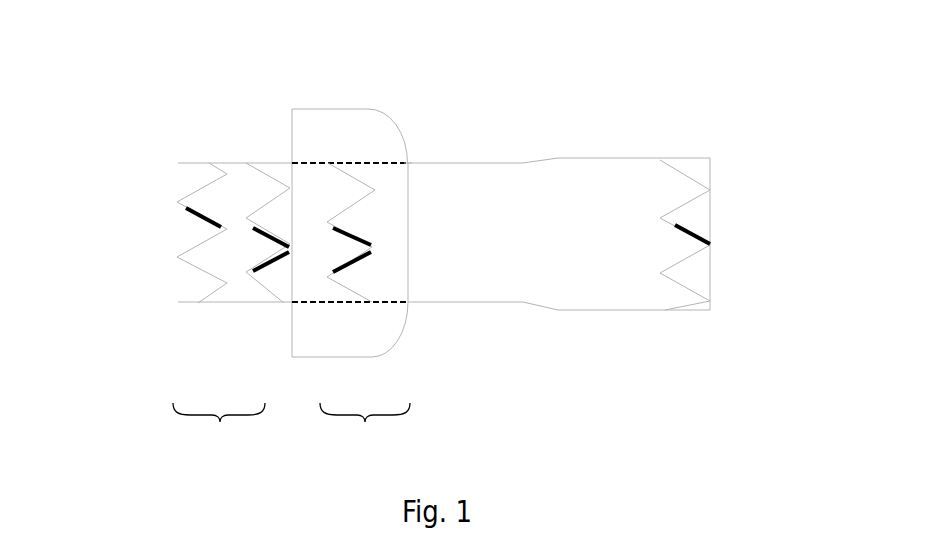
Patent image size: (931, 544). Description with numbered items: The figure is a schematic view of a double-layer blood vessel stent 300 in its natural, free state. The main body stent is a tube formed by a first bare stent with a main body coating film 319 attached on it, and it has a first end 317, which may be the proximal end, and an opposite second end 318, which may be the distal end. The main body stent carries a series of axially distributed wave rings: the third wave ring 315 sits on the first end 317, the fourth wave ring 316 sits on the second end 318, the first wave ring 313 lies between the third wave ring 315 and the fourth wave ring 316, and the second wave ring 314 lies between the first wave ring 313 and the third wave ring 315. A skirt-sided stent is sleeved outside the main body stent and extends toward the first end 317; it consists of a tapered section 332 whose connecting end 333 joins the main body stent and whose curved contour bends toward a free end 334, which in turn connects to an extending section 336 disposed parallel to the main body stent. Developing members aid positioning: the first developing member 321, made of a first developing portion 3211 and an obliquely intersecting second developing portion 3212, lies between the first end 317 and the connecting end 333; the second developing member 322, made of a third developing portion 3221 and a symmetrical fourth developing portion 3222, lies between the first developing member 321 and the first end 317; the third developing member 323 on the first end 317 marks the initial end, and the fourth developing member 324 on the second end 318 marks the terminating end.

The double-layer blood vessel stent 300 is at (198, 32).
The first wave ring 313 is at (343, 180).
The second wave ring 314 is at (267, 180).
The third wave ring 315 is at (193, 194).
The fourth wave ring 316 is at (682, 173).
The first end 317 is at (158, 261).
The second end 318 is at (722, 281).
The main body coating film 319 is at (617, 290).
The first developing member 321 is at (365, 427).
The first developing portion 3211 is at (333, 228).
The second developing portion 3212 is at (371, 253).
The second developing member 322 is at (219, 427).
The third developing portion 3221 is at (251, 228).
The fourth developing portion 3222 is at (288, 253).
The third developing member 323 is at (188, 209).
The fourth developing member 324 is at (688, 228).
The tapered section 332 is at (382, 144).
The connecting end 333 is at (420, 149).
The free end 334 is at (370, 99).
The extending section 336 is at (331, 137).